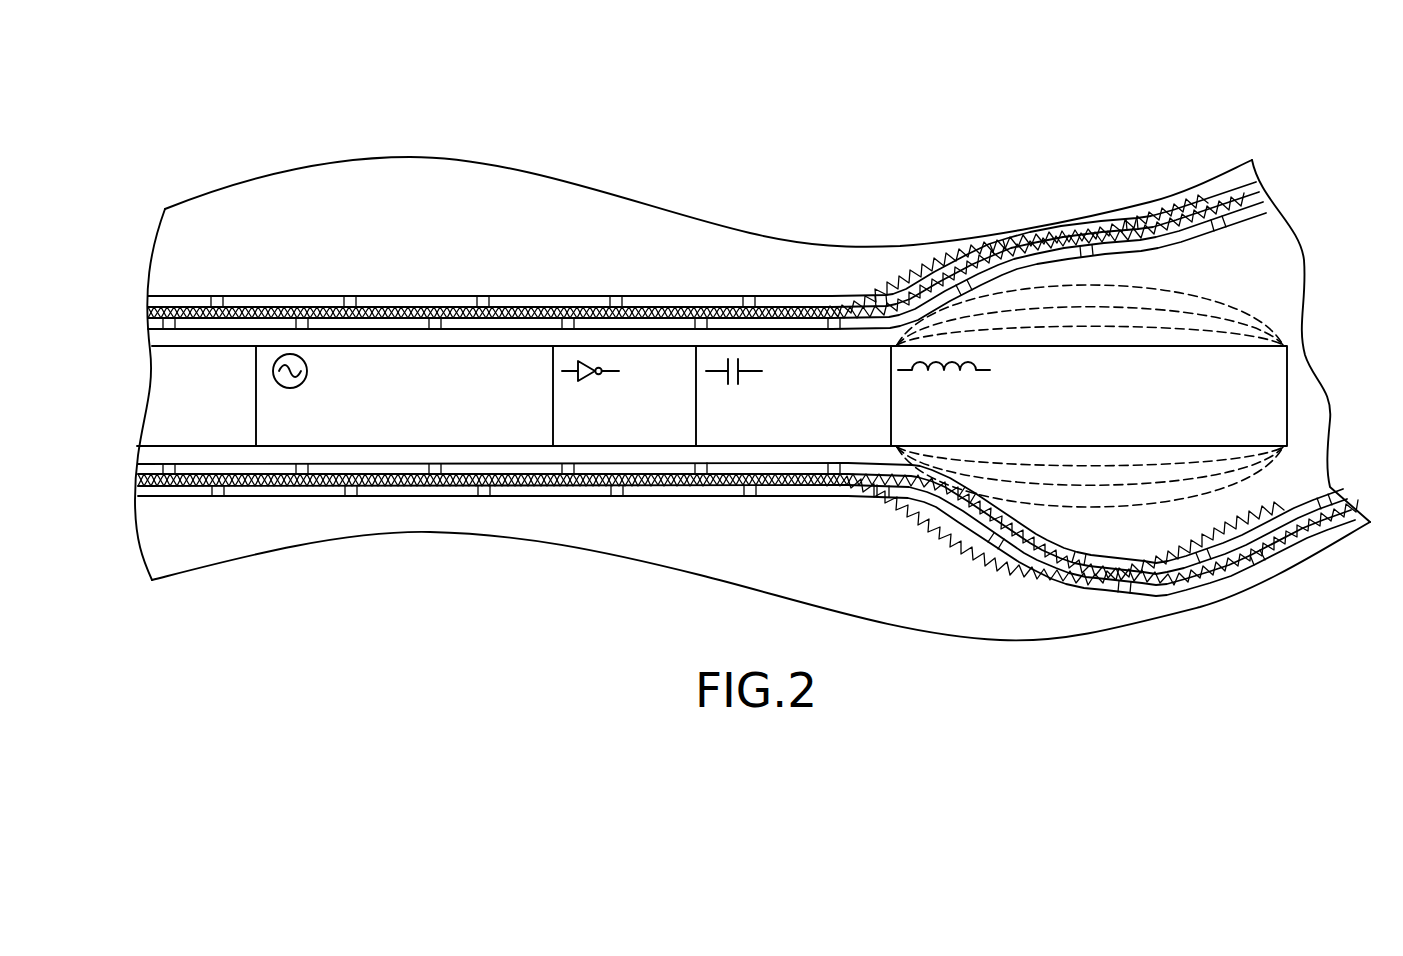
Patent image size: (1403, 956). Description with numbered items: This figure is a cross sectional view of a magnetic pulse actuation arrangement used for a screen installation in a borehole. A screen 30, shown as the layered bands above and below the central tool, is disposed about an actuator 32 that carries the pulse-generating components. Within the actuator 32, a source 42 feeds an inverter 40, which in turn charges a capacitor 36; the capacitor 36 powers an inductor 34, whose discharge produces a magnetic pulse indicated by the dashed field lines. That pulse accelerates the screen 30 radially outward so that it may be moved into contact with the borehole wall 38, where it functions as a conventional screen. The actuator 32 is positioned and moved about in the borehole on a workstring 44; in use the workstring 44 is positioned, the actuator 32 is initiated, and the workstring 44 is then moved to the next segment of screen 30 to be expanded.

The screen 30 is at (990, 265).
The actuator 32 is at (934, 134).
The inductor 34 is at (934, 428).
The capacitor 36 is at (732, 445).
The borehole wall 38 is at (857, 245).
The inverter 40 is at (577, 434).
The source 42 is at (333, 437).
The workstring 44 is at (490, 338).